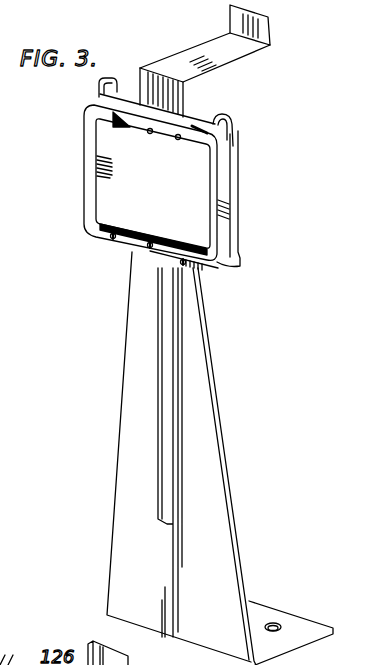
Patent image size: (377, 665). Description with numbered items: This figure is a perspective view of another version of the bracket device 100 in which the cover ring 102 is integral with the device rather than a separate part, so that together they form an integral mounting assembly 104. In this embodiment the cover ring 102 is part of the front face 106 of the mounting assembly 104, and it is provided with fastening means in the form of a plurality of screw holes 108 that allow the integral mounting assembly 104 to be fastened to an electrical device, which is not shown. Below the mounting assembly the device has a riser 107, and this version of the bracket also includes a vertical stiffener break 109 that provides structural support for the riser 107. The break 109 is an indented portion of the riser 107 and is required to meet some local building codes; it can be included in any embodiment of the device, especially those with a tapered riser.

The device 100 is at (125, 274).
The cover ring 102 is at (85, 180).
The integral mounting assembly 104 is at (246, 172).
The front face 106 is at (233, 141).
The riser 107 is at (133, 418).
The screw holes 108 is at (175, 135).
The vertical stiffener break 109 is at (167, 380).